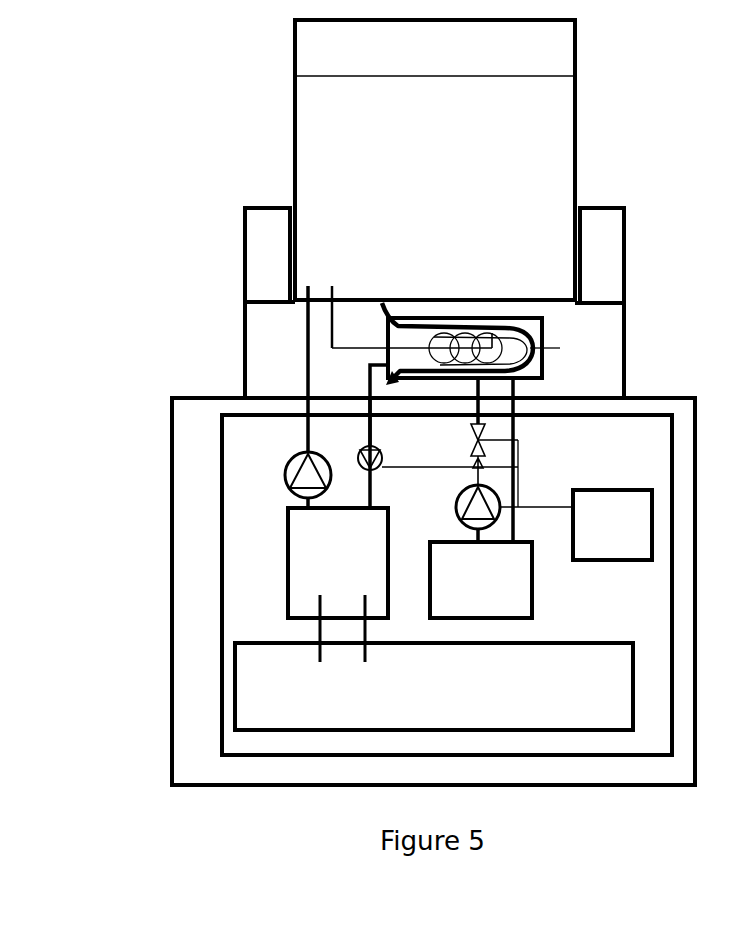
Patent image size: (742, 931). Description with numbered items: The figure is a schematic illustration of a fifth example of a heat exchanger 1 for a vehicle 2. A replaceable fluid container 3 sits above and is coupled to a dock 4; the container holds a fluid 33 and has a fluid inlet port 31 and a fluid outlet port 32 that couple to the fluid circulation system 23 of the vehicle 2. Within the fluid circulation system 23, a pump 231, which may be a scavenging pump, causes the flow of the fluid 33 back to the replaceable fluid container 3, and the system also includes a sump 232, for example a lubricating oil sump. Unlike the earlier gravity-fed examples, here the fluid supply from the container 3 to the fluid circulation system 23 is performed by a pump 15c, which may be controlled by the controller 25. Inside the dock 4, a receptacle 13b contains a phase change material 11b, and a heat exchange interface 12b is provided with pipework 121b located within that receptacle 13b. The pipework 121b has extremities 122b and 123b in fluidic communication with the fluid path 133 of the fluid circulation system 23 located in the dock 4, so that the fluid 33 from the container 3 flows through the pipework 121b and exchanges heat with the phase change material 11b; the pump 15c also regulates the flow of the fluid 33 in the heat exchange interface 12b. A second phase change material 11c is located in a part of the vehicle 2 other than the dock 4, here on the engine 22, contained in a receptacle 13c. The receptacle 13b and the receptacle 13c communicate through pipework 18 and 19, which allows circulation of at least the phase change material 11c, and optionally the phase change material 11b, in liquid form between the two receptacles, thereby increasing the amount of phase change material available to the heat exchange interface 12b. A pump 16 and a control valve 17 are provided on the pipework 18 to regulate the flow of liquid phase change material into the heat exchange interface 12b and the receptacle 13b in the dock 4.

The heat exchanger 1 is at (226, 295).
The vehicle 2 is at (204, 454).
The replaceable fluid container 3 is at (350, 69).
The dock 4 is at (604, 389).
The fluid 33 is at (353, 119).
The fluid outlet port 32 is at (330, 288).
The fluid inlet port 31 is at (296, 305).
The fluid path 133 is at (337, 340).
The extremity 123b is at (372, 362).
The extremity 122b is at (382, 300).
The heat exchange interface 12b is at (530, 328).
The receptacle 13b is at (513, 318).
The phase change material 11b is at (415, 332).
The pipework 121b is at (560, 348).
The pump 231 is at (300, 478).
The fluid circulation system 23 is at (300, 548).
The engine 22 is at (290, 611).
The pump 15c is at (362, 455).
The control valve 17 is at (470, 440).
The pipework 18 is at (475, 468).
The pump 16 is at (475, 508).
The pipework 19 is at (512, 430).
The controller 25 is at (630, 541).
The phase change material 11c is at (505, 597).
The receptacle 13c is at (532, 600).
The sump 232 is at (306, 699).